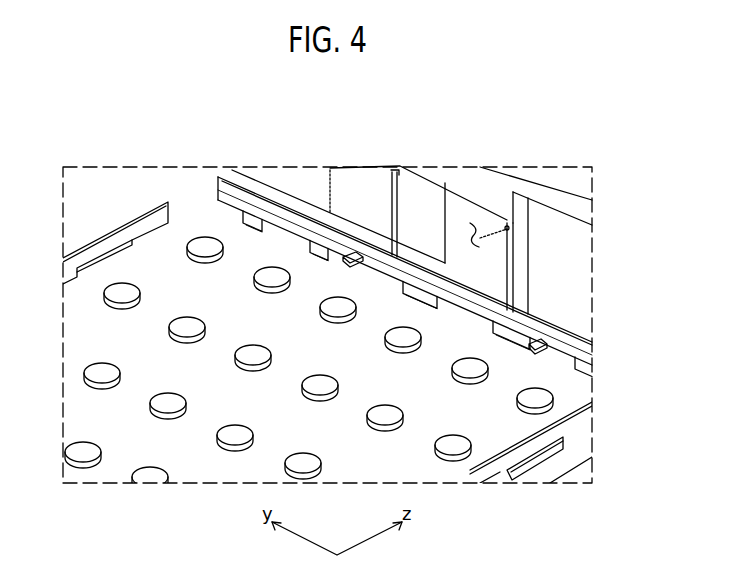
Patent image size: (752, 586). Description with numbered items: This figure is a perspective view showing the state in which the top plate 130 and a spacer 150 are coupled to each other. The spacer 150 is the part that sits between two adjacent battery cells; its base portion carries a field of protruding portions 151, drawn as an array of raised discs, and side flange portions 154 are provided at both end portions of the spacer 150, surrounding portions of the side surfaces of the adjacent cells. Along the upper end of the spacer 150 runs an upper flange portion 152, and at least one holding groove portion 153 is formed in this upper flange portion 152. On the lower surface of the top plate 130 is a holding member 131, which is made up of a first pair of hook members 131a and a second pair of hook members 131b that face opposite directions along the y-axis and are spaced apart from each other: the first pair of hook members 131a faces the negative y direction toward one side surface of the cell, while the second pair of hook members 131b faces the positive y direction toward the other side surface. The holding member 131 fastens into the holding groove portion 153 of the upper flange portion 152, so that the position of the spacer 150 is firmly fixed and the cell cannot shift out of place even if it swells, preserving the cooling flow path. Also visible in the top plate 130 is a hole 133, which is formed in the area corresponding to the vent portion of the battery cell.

The top plate 130 is at (360, 178).
The holding member 131 is at (498, 122).
The first pair of hook members 131a is at (352, 257).
The second pair of hook members 131b is at (537, 346).
The hole 133 is at (507, 229).
The spacer 150 is at (133, 346).
The protruding portions 151 is at (118, 287).
The upper flange portion 152 is at (268, 190).
The holding groove portion 153 is at (365, 283).
The side flange portion 154 is at (158, 202).